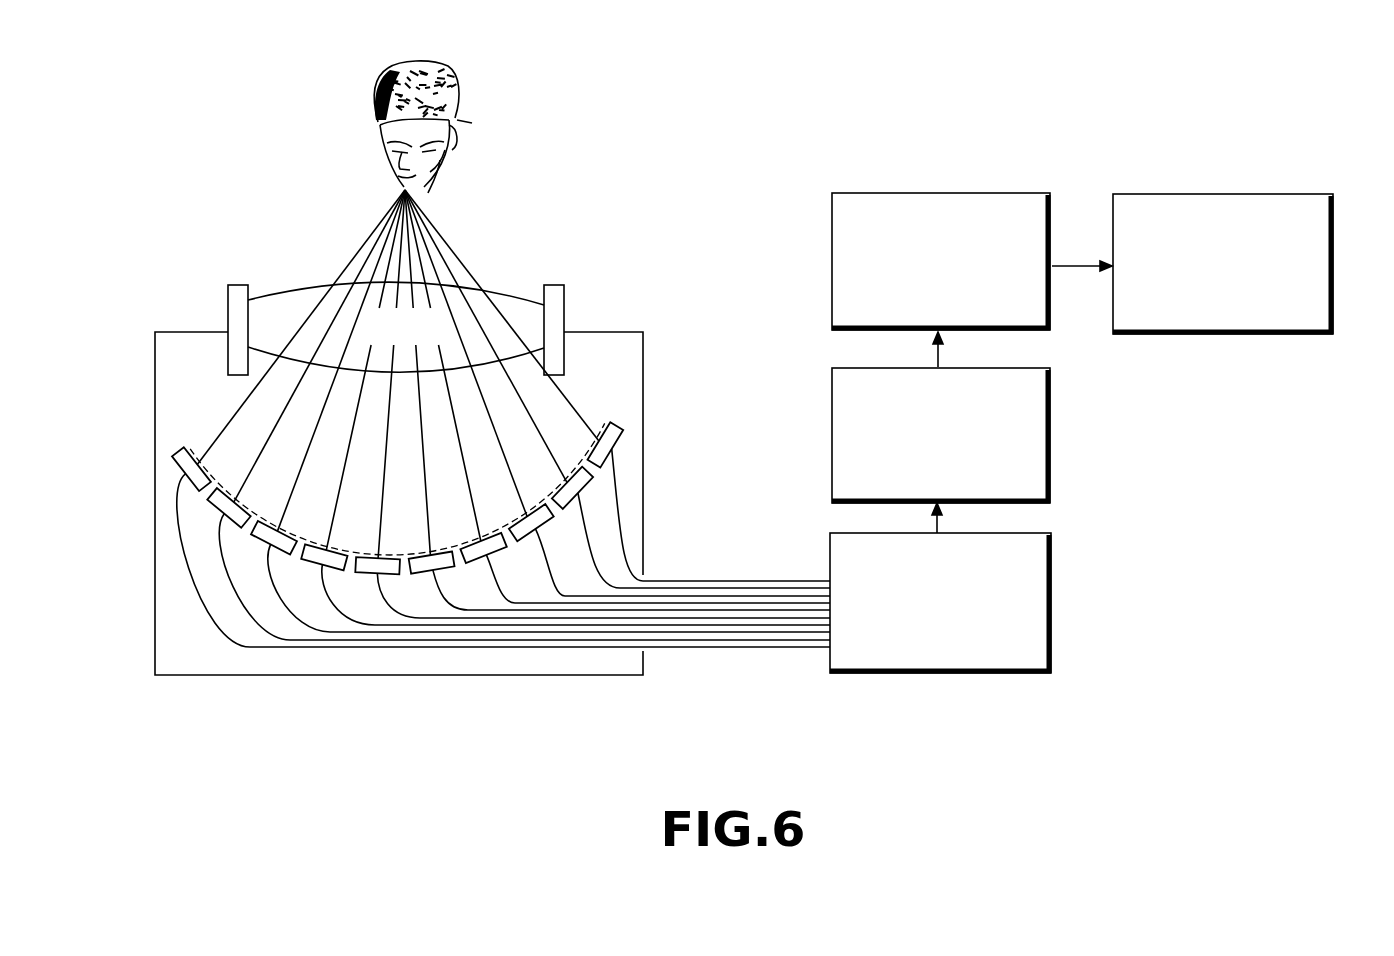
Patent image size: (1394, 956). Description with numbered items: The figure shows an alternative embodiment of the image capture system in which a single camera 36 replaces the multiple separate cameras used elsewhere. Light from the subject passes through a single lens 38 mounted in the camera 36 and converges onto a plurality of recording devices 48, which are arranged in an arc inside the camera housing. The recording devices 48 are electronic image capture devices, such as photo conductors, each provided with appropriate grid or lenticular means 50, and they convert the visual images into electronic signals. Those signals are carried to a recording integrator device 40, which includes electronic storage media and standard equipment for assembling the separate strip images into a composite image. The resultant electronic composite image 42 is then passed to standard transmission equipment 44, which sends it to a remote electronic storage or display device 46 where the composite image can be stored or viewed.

The camera 36 is at (155, 627).
The lens 38 is at (566, 303).
The recording integrator device 40 is at (1052, 604).
The electronic composite image 42 is at (832, 432).
The standard transmission equipment 44 is at (832, 261).
The remote electronic storage or display device 46 is at (1335, 261).
The recording devices 48 is at (614, 428).
The grid or lenticular means 50 is at (195, 443).